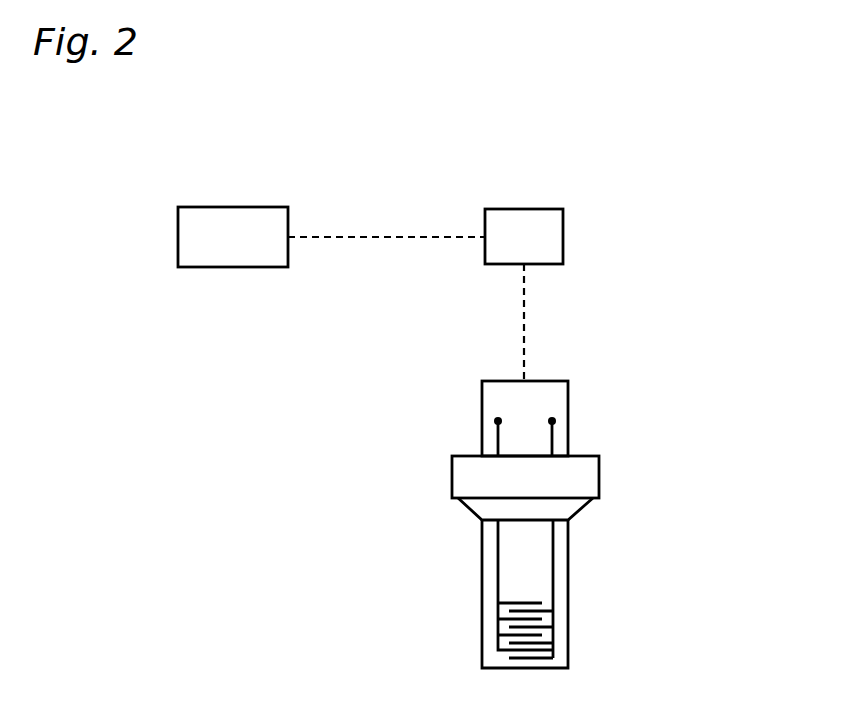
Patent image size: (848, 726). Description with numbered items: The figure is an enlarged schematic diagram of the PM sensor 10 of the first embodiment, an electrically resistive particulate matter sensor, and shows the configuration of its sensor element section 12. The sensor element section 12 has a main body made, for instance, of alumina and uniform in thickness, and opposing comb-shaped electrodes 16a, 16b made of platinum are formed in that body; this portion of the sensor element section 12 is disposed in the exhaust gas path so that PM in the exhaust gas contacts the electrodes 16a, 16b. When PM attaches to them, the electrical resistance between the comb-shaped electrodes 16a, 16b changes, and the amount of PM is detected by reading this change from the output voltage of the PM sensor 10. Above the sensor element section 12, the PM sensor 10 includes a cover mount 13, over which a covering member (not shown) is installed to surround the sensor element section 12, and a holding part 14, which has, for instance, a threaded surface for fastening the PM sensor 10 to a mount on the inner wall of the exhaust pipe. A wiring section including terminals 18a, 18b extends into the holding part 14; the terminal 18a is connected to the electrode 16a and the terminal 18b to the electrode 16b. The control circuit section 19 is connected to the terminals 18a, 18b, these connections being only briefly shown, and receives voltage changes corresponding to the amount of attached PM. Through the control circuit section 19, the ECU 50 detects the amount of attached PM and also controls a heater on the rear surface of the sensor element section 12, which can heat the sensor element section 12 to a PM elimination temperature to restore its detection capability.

The ECU 50 is at (257, 207).
The control circuit section 19 is at (563, 237).
The PM sensor 10 is at (742, 370).
The holding part 14 is at (568, 437).
The cover mount 13 is at (599, 482).
The terminal 18a is at (498, 421).
The terminal 18b is at (551, 421).
The sensor element section 12 is at (482, 642).
The comb-shaped electrode 16a is at (498, 585).
The comb-shaped electrode 16b is at (553, 567).